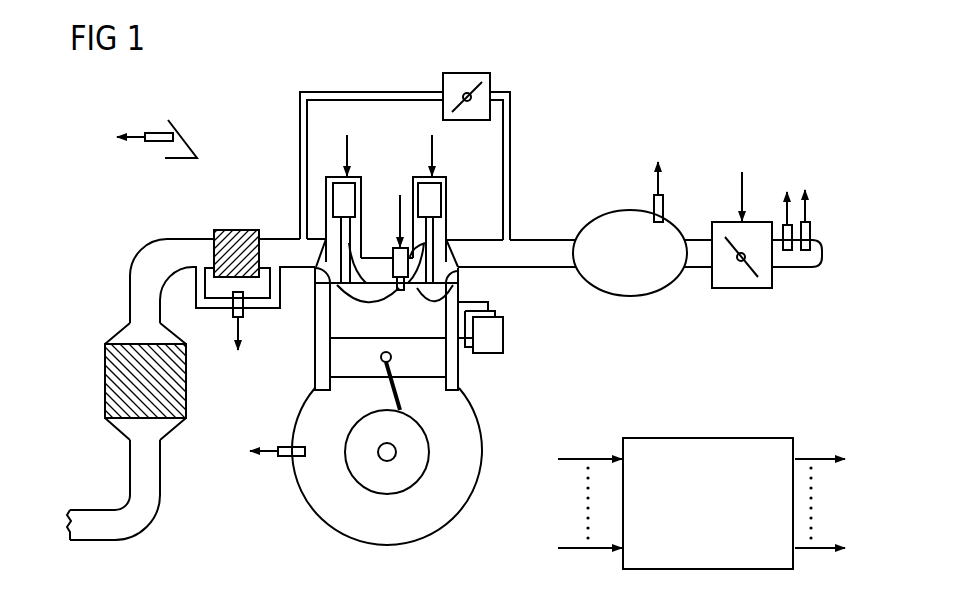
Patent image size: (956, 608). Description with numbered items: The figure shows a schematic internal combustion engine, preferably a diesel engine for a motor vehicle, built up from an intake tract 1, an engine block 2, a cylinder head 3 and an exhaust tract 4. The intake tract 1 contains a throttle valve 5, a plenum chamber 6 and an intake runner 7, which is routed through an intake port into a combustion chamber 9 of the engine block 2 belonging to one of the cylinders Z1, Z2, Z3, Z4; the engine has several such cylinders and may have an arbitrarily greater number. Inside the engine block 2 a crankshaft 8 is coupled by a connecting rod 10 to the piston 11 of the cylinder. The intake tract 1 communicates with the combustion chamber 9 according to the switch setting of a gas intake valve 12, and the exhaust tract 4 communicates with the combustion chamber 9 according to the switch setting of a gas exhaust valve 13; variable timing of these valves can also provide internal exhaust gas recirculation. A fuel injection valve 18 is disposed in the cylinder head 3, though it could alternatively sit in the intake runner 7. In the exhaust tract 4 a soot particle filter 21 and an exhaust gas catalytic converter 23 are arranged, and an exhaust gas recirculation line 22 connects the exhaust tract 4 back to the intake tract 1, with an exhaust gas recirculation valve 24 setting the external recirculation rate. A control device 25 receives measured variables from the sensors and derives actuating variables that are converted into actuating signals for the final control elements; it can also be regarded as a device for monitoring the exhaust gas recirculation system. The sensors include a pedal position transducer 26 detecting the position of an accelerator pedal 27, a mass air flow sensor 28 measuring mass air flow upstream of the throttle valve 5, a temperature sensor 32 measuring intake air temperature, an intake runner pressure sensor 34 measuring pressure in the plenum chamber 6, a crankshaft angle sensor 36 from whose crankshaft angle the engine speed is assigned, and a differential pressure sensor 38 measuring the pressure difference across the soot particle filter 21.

The intake tract 1 is at (653, 308).
The engine block 2 is at (305, 346).
The cylinder head 3 is at (387, 236).
The exhaust tract 4 is at (135, 260).
The throttle valve 5 is at (764, 278).
The plenum chamber 6 is at (667, 284).
The intake runner 7 is at (531, 240).
The crankshaft 8 is at (392, 452).
The combustion chamber 9 is at (333, 308).
The connecting rod 10 is at (395, 399).
The piston 11 is at (420, 372).
The gas intake valve 12 is at (430, 292).
The gas exhaust valve 13 is at (340, 288).
The fuel injection valve 18 is at (397, 293).
The soot particle filter 21 is at (240, 229).
The exhaust gas recirculation line 22 is at (508, 113).
The exhaust gas catalytic converter 23 is at (178, 398).
The exhaust gas recirculation valve 24 is at (466, 73).
The control device 25 is at (706, 437).
The pedal position transducer 26 is at (158, 132).
The accelerator pedal 27 is at (184, 137).
The mass air flow sensor 28 is at (783, 224).
The temperature sensor 32 is at (812, 230).
The intake runner pressure sensor 34 is at (653, 200).
The crankshaft angle sensor 36 is at (283, 457).
The differential pressure sensor 38 is at (243, 313).
The cylinder Z1 is at (452, 358).
The cylinder Z2 is at (500, 338).
The cylinder Z3 is at (497, 313).
The cylinder Z4 is at (490, 303).